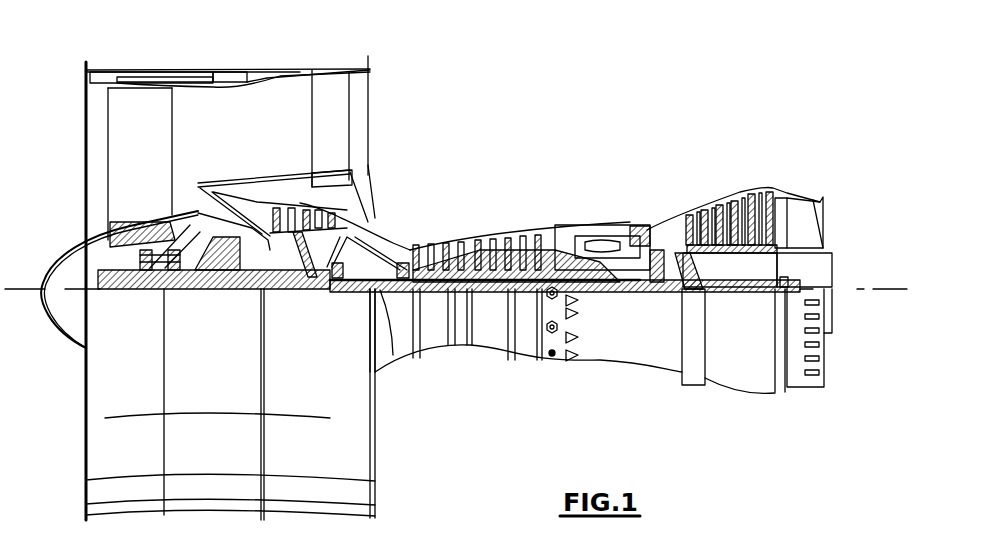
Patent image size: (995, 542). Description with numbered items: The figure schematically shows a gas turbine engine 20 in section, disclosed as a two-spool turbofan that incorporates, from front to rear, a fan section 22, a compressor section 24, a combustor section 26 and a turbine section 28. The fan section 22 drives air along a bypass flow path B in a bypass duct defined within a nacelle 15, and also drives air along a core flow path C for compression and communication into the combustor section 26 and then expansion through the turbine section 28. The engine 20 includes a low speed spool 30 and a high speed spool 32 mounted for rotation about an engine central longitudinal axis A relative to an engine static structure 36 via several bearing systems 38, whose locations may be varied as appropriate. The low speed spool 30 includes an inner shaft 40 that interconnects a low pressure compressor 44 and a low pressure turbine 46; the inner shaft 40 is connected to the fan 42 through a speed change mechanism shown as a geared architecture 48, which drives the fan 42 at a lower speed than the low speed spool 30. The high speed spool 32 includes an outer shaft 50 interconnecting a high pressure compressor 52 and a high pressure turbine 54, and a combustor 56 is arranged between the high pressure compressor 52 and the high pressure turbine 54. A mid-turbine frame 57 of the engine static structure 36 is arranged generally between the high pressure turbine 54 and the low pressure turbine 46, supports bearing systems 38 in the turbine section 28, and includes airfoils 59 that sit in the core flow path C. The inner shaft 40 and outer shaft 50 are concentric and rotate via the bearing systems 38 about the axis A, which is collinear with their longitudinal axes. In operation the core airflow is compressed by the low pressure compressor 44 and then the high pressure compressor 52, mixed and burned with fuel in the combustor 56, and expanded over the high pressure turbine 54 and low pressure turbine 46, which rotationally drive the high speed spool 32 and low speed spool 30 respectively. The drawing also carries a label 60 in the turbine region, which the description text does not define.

The nacelle 15 is at (230, 72).
The gas turbine engine 20 is at (590, 104).
The fan section 22 is at (172, 58).
The compressor section 24 is at (410, 214).
The combustor section 26 is at (582, 206).
The turbine section 28 is at (708, 176).
The low speed spool 30 is at (493, 300).
The high speed spool 32 is at (528, 240).
The engine static structure 36 is at (527, 355).
The bearing systems 38 is at (337, 285).
The inner shaft 40 is at (392, 355).
The fan 42 is at (158, 170).
The low pressure compressor 44 is at (348, 178).
The low pressure turbine 46 is at (735, 192).
The geared architecture 48 is at (230, 285).
The outer shaft 50 is at (590, 292).
The high pressure compressor 52 is at (478, 245).
The high pressure turbine 54 is at (638, 213).
The combustor 56 is at (590, 235).
The mid-turbine frame 57 is at (672, 208).
The airfoils 59 is at (690, 262).
The vanes 60 is at (695, 210).
The engine central longitudinal axis A is at (898, 289).
The bypass flow path B is at (205, 128).
The core flow path C is at (235, 208).